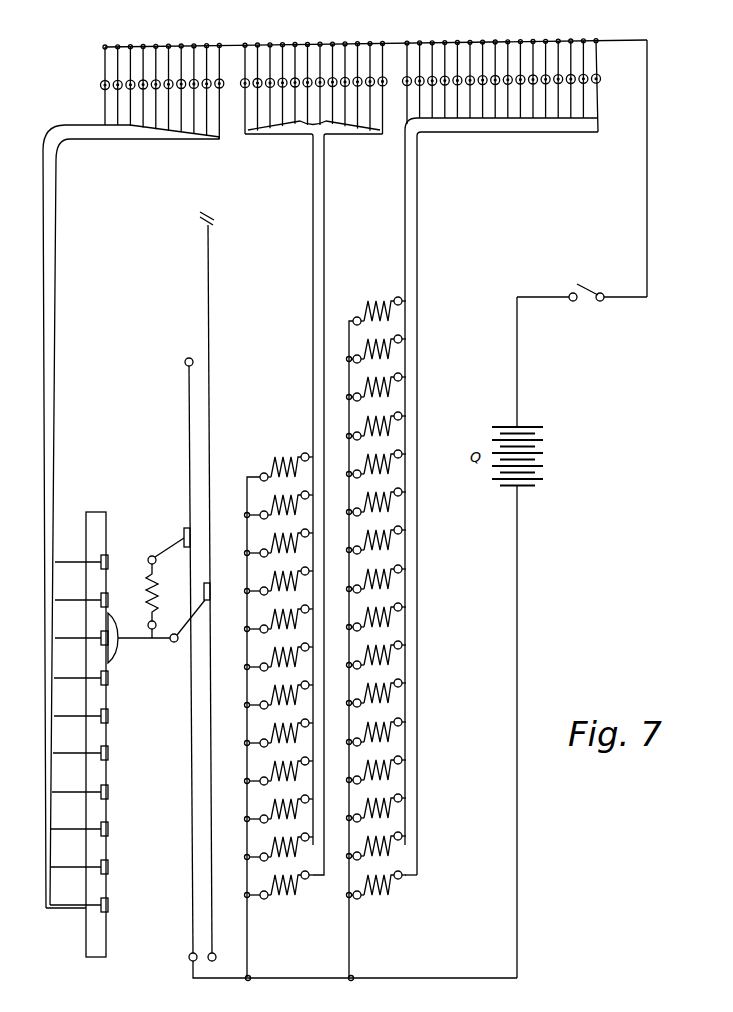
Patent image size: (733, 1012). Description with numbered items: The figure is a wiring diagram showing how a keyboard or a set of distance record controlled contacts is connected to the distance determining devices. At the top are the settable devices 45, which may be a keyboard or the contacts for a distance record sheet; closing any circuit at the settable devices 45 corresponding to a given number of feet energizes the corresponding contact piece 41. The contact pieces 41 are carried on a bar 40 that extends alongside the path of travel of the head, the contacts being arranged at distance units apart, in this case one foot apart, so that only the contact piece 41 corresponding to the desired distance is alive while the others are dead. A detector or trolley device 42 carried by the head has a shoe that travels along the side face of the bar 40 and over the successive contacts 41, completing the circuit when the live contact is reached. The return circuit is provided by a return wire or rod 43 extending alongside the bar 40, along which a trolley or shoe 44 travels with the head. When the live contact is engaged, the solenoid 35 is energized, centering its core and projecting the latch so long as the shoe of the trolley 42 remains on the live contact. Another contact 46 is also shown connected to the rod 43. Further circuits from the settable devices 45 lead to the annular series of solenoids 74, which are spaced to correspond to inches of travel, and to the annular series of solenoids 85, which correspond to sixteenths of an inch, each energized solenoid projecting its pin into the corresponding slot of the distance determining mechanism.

The solenoid 35 is at (146, 584).
The bar 40 is at (107, 531).
The contact pieces 41 is at (109, 680).
The detector or trolley device 42 is at (117, 641).
The return wire or rod 43 is at (190, 466).
The trolley or shoe 44 is at (184, 534).
The settable devices 45 is at (107, 82).
The contact 46 is at (204, 589).
The solenoids 74 is at (283, 460).
The solenoids 85 is at (378, 306).